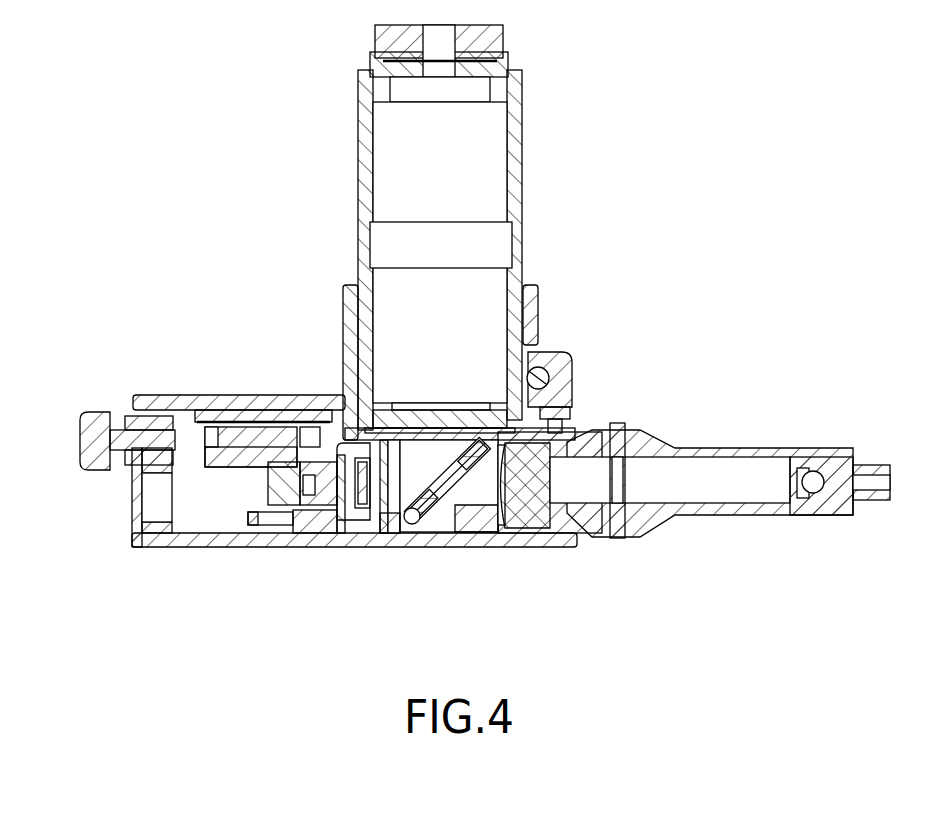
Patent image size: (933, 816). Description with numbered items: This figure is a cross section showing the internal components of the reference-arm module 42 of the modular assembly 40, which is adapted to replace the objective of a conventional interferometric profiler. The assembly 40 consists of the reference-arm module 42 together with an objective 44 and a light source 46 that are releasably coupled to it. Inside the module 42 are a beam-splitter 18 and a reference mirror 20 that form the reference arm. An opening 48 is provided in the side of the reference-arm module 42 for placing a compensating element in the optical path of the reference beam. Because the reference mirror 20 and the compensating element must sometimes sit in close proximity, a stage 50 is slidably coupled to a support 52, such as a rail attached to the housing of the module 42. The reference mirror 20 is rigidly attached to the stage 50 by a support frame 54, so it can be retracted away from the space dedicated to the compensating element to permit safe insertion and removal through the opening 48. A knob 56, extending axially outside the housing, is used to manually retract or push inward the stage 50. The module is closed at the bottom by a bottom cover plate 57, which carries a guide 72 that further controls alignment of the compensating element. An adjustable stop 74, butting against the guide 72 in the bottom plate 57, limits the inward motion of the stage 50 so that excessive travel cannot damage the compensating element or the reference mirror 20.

The modular assembly 40 is at (630, 102).
The objective 44 is at (528, 223).
The reference-arm module 42 is at (172, 395).
The light source 46 is at (757, 443).
The beam-splitter 18 is at (440, 510).
The reference mirror 20 is at (322, 520).
The opening 48 is at (352, 500).
The stage 50 is at (237, 462).
The support 52 is at (272, 417).
The support frame 54 is at (262, 492).
The knob 56 is at (78, 438).
The bottom cover plate 57 is at (167, 545).
The guide 72 is at (335, 500).
The adjustable stop 74 is at (260, 518).